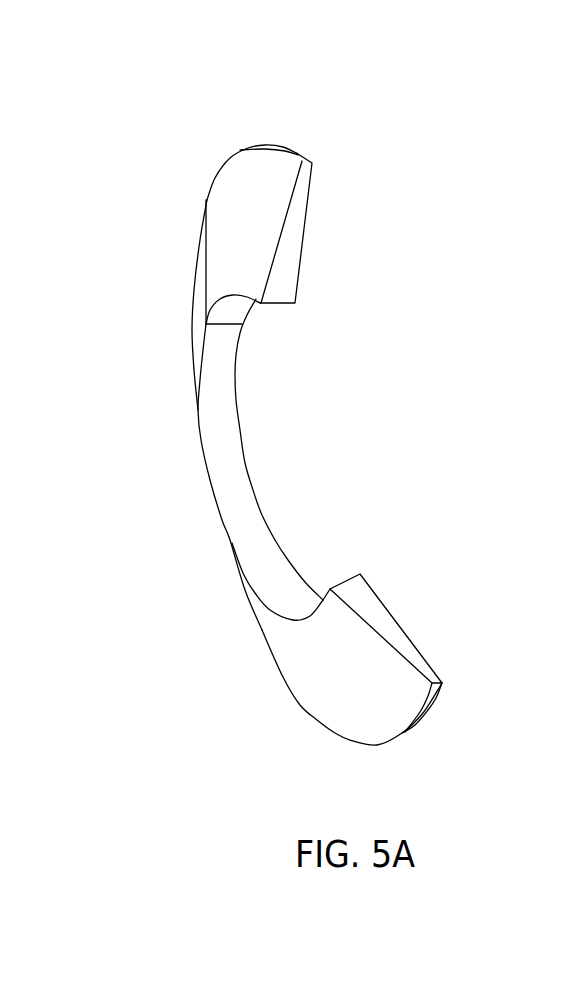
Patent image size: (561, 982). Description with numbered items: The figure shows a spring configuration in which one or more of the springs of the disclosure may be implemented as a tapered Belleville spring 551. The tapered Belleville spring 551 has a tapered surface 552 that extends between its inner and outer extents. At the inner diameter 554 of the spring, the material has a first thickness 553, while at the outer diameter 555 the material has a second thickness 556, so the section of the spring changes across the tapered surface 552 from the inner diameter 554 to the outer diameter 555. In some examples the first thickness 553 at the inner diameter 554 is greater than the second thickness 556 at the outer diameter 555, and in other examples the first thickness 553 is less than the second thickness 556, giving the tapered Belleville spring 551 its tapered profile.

The tapered Belleville spring 551 is at (332, 382).
The tapered surface 552 is at (217, 205).
The first thickness 553 is at (342, 566).
The inner diameter 554 is at (240, 479).
The outer diameter 555 is at (298, 153).
The second thickness 556 is at (456, 696).